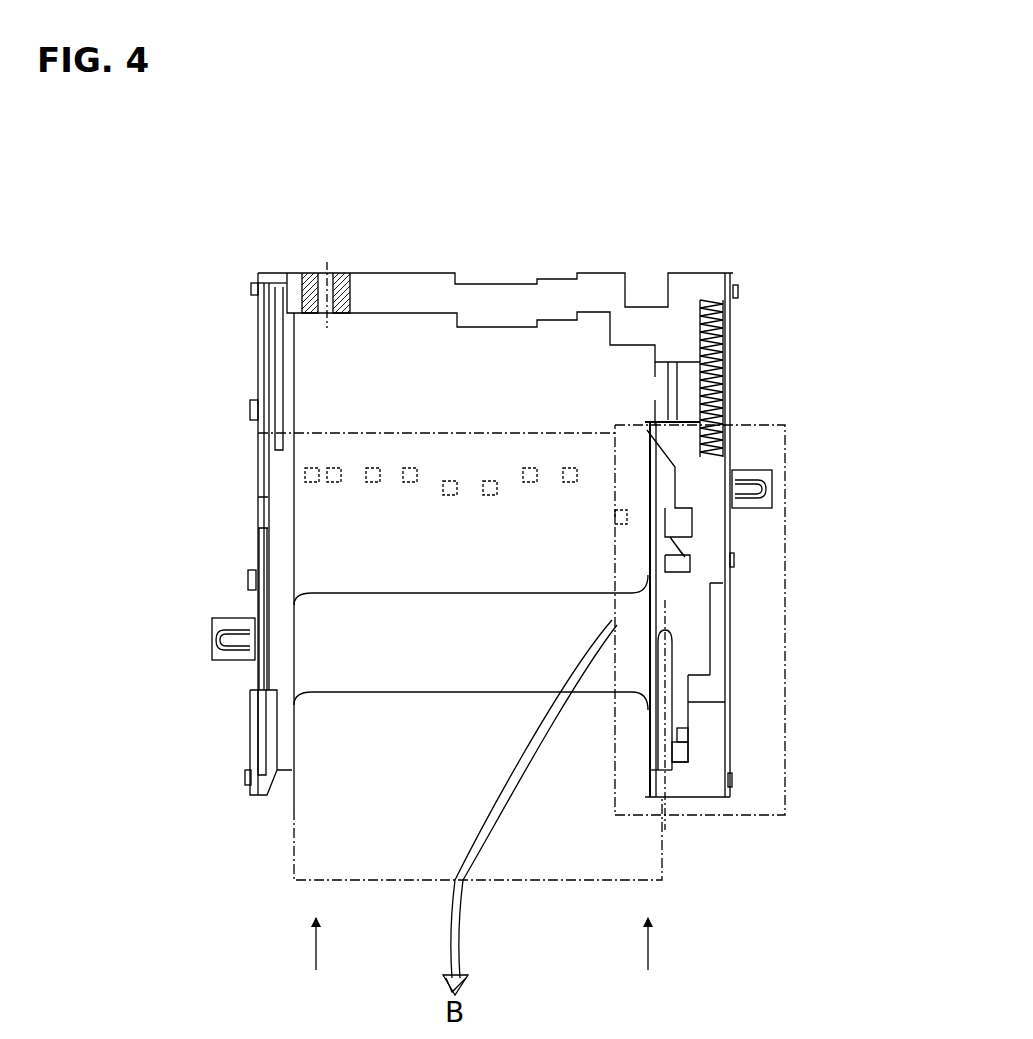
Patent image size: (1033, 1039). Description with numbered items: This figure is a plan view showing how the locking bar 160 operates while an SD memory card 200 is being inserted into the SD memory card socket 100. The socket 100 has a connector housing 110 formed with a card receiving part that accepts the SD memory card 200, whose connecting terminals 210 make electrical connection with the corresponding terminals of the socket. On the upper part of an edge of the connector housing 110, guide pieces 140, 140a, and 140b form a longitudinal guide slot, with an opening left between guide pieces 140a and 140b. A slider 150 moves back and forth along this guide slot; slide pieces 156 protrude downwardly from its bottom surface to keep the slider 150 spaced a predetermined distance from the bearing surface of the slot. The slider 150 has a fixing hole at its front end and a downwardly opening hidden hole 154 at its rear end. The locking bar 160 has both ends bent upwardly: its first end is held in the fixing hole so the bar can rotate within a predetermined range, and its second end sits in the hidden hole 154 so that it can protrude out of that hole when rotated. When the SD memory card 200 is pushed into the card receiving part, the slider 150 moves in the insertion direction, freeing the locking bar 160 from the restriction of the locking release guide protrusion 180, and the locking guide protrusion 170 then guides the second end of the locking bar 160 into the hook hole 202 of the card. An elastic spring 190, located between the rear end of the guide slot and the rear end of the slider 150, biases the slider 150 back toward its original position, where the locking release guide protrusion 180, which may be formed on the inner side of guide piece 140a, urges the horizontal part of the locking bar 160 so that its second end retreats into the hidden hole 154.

The SD memory card socket 100 is at (445, 250).
The connector housing 110 is at (522, 290).
The guide piece 140 is at (735, 458).
The guide piece 140a is at (662, 735).
The guide piece 140b is at (678, 490).
The slider 150 is at (740, 538).
The hidden hole 154 is at (690, 574).
The slide pieces 156 is at (690, 742).
The locking bar 160 is at (677, 638).
The locking guide protrusion 170 is at (690, 560).
The locking release guide protrusion 180 is at (677, 722).
The elastic spring 190 is at (730, 360).
The SD memory card 200 is at (292, 586).
The hook hole 202 is at (680, 562).
The connecting terminal 210 is at (305, 470).